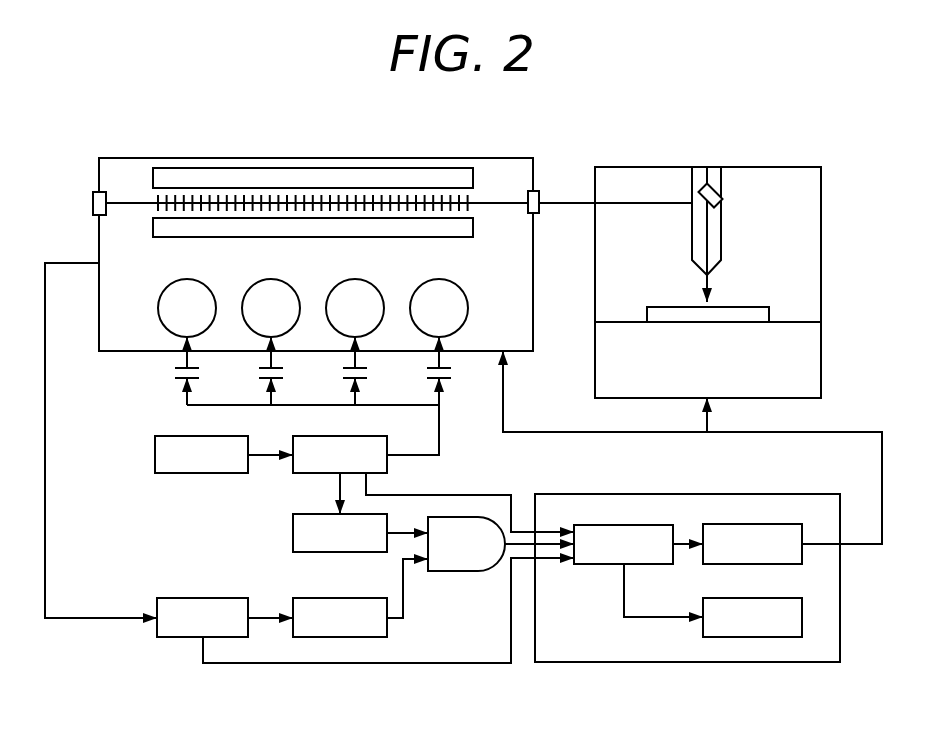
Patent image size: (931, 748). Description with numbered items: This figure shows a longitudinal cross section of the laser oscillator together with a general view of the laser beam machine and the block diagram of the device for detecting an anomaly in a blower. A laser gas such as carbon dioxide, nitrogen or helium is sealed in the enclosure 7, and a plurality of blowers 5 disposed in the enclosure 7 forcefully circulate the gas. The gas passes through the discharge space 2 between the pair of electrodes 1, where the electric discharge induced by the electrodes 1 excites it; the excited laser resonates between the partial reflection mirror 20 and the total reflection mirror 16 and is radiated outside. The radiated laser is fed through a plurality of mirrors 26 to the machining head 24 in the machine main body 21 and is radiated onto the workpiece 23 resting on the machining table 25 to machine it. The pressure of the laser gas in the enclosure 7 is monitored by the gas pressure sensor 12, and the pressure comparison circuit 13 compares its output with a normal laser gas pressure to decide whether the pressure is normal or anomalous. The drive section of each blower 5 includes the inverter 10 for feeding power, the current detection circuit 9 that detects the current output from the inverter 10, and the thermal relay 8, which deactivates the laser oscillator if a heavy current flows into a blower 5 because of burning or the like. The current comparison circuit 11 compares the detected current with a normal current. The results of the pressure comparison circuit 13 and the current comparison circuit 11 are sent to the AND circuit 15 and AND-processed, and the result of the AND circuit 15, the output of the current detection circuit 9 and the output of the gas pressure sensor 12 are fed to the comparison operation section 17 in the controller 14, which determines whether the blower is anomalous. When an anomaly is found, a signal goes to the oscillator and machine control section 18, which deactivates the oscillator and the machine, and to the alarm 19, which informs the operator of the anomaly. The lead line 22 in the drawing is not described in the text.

The electrodes 1 is at (447, 225).
The discharge space 2 is at (218, 195).
The blowers 5 is at (175, 294).
The enclosure 7 is at (332, 157).
The thermal relay 8 is at (178, 383).
The current detection circuit 9 is at (295, 462).
The inverter 10 is at (175, 465).
The current comparison circuit 11 is at (295, 533).
The gas pressure sensor 12 is at (170, 640).
The pressure comparison circuit 13 is at (382, 627).
The controller 14 is at (798, 662).
The AND circuit 15 is at (460, 565).
The total reflection mirror 16 is at (93, 198).
The comparison operation section 17 is at (605, 564).
The oscillator and machine control section 18 is at (785, 557).
The alarm 19 is at (752, 637).
The partial reflection mirror 20 is at (538, 192).
The machine main body 21 is at (787, 167).
The shaft 22 is at (644, 200).
The workpiece 23 is at (740, 313).
The machining head 24 is at (721, 232).
The machining table 25 is at (821, 360).
The mirrors 26 is at (712, 185).